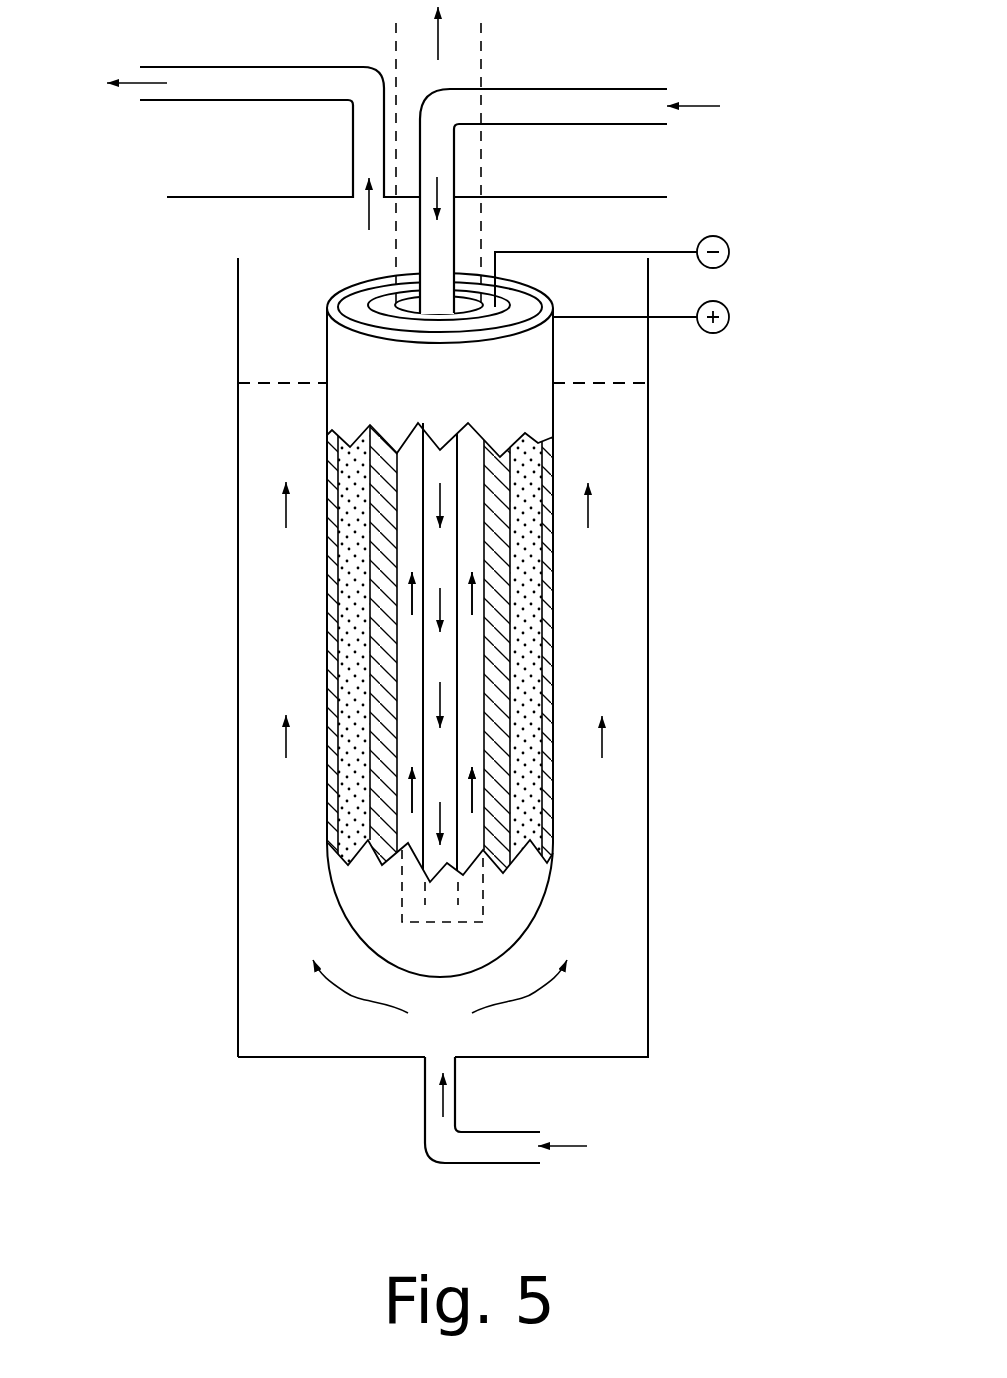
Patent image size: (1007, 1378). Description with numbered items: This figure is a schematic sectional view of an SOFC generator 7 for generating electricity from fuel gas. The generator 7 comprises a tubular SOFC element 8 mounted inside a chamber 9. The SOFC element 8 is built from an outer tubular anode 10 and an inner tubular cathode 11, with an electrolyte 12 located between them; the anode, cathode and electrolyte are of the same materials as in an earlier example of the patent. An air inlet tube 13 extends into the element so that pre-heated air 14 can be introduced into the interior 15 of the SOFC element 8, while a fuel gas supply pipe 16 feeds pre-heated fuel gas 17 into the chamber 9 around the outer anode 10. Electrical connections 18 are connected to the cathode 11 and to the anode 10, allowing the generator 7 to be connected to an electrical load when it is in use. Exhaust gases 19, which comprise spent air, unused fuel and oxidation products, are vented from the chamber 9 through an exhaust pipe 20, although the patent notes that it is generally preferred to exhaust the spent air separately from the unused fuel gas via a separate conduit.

The SOFC generator 7 is at (234, 517).
The tubular SOFC element 8 is at (327, 365).
The chamber 9 is at (237, 600).
The outer tubular anode 10 is at (333, 820).
The inner tubular cathode 11 is at (385, 764).
The electrolyte 12 is at (352, 682).
The air inlet tube 13 is at (570, 88).
The pre-heated air 14 is at (695, 104).
The interior of the SOFC element 15 is at (463, 699).
The fuel gas supply pipe 16 is at (492, 1165).
The pre-heated fuel gas 17 is at (570, 1147).
The electrical connections 18 is at (707, 288).
The exhaust gases 19 is at (143, 82).
The exhaust pipe 20 is at (268, 66).